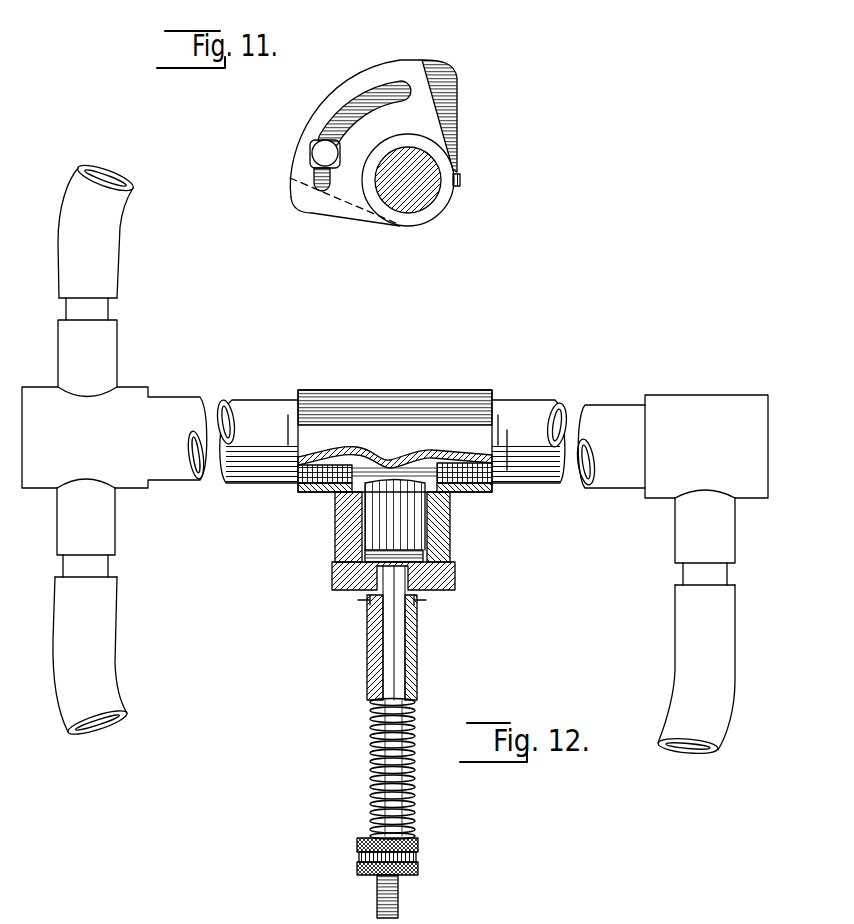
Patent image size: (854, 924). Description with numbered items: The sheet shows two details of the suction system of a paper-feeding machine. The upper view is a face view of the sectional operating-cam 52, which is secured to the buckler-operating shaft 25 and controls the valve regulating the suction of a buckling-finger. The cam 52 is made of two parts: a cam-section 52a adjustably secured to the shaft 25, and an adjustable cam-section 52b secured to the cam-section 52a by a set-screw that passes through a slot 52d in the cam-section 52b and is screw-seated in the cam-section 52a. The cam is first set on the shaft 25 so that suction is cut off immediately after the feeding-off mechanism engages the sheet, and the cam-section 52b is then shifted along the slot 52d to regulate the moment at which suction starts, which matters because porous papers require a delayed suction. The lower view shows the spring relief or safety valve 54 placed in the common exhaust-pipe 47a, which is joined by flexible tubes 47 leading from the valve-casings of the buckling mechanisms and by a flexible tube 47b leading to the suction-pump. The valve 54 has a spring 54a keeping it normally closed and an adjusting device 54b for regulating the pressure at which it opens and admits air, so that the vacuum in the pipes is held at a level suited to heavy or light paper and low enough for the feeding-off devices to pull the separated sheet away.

In FIG. 11, the buckler-operating shaft 25 is at (410, 207).
In FIG. 11, the sectional operating-cam 52 is at (318, 152).
In FIG. 11, the cam-section 52a is at (457, 93).
In FIG. 11, the adjustable cam-section 52b is at (395, 70).
In FIG. 11, the slot 52d is at (367, 90).
In FIG. 12, the flexible tube 47 is at (105, 690).
In FIG. 12, the exhaust-pipe 47a is at (255, 407).
In FIG. 12, the flexible tube 47b is at (112, 262).
In FIG. 12, the spring relief or safety valve 54 is at (360, 567).
In FIG. 12, the spring 54a is at (373, 795).
In FIG. 12, the adjusting device 54b is at (418, 850).